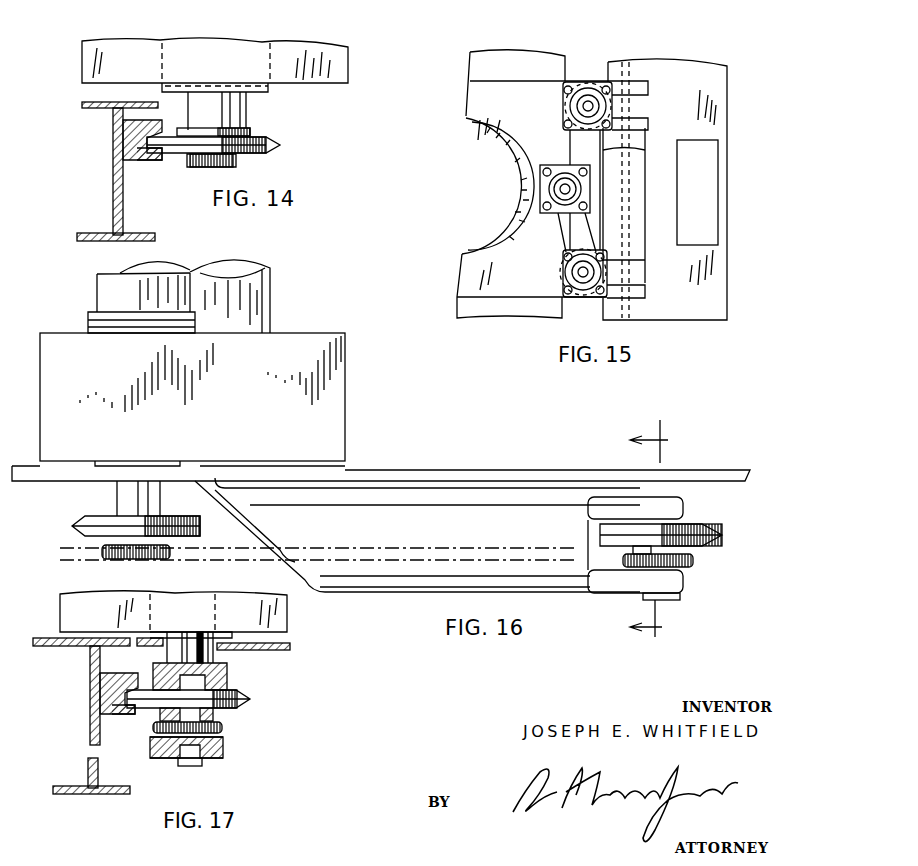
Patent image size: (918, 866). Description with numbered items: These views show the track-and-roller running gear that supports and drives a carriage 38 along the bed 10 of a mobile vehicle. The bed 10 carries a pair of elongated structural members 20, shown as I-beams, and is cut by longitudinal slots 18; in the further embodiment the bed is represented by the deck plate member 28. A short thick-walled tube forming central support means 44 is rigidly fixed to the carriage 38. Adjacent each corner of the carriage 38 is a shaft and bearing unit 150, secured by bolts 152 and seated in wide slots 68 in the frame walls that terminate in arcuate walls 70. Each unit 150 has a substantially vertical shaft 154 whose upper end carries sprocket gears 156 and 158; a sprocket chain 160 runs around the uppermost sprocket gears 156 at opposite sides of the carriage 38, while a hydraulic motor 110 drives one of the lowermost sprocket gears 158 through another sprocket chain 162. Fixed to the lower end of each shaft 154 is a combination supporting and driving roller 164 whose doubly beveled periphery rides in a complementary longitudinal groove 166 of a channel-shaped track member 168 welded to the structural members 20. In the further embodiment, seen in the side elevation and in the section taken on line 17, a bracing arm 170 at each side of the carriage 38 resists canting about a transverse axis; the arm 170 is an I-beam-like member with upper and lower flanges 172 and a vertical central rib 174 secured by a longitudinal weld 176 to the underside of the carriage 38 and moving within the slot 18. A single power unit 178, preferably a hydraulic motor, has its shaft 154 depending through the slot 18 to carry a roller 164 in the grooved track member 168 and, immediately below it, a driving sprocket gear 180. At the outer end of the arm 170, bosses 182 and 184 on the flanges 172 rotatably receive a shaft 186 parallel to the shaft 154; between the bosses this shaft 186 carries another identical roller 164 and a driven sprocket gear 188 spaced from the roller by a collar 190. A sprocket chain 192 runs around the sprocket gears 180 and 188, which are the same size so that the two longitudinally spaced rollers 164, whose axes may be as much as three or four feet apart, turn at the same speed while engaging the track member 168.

In FIG. 14, the bed 10 is at (322, 45).
In FIG. 15, the bed 10 is at (700, 66).
In FIG. 17, the bed 10 is at (50, 640).
In FIG. 16, the section line 17— 17 is at (658, 532).
In FIG. 17, the slots 18 is at (162, 650).
In FIG. 14, the elongated structural members 20 is at (112, 178).
In FIG. 17, the elongated structural members 20 is at (90, 713).
In FIG. 16, the deck plate member 28 is at (455, 471).
In FIG. 17, the deck plate member 28 is at (286, 650).
In FIG. 14, the carriage 38 is at (325, 88).
In FIG. 15, the carriage 38 is at (470, 101).
In FIG. 16, the carriage 38 is at (345, 365).
In FIG. 17, the carriage 38 is at (288, 609).
In FIG. 15, the central support means 44 is at (490, 240).
In FIG. 16, the central support means 44 is at (272, 318).
In FIG. 15, the slots 68 is at (648, 92).
In FIG. 15, the arcuate walls 70 is at (565, 107).
In FIG. 15, the hydraulic motor 110 is at (558, 178).
In FIG. 14, the shaft and bearing unit 150 is at (280, 50).
In FIG. 15, the shaft and bearing unit 150 is at (586, 78).
In FIG. 15, the bolts 152 is at (612, 129).
In FIG. 14, the vertical shaft 154 is at (190, 100).
In FIG. 16, the vertical shaft 154 is at (120, 500).
In FIG. 17, the vertical shaft 154 is at (182, 635).
In FIG. 15, the sprocket gear 156 is at (612, 85).
In FIG. 15, the sprocket gear 158 is at (678, 158).
In FIG. 15, the sprocket chain 160 is at (645, 150).
In FIG. 15, the sprocket chain 162 is at (558, 233).
In FIG. 14, the supporting and driving roller 164 is at (280, 148).
In FIG. 16, the supporting and driving roller 164 is at (75, 525).
In FIG. 17, the supporting and driving roller 164 is at (252, 700).
In FIG. 14, the longitudinal grooves 166 is at (140, 163).
In FIG. 17, the longitudinal grooves 166 is at (126, 716).
In FIG. 14, the track members 168 is at (118, 137).
In FIG. 17, the track members 168 is at (95, 688).
In FIG. 16, the bracing arms 170 is at (345, 495).
In FIG. 16, the upper and lower flanges 172 is at (522, 497).
In FIG. 17, the upper and lower flanges 172 is at (220, 681).
In FIG. 16, the vertical central rib 174 is at (280, 487).
In FIG. 17, the vertical central rib 174 is at (226, 634).
In FIG. 16, the longitudinal weld 176 is at (238, 462).
In FIG. 16, the power unit 178 is at (105, 300).
In FIG. 16, the driving sprocket gear 180 is at (165, 558).
In FIG. 16, the boss 182 is at (686, 516).
In FIG. 17, the boss 182 is at (215, 700).
In FIG. 16, the boss 184 is at (686, 578).
In FIG. 17, the boss 184 is at (226, 745).
In FIG. 16, the shaft 186 is at (647, 598).
In FIG. 17, the shaft 186 is at (186, 768).
In FIG. 16, the driven sprocket gear 188 is at (695, 561).
In FIG. 17, the driven sprocket gear 188 is at (223, 727).
In FIG. 16, the collar 190 is at (635, 550).
In FIG. 16, the sprocket chain 192 is at (430, 556).